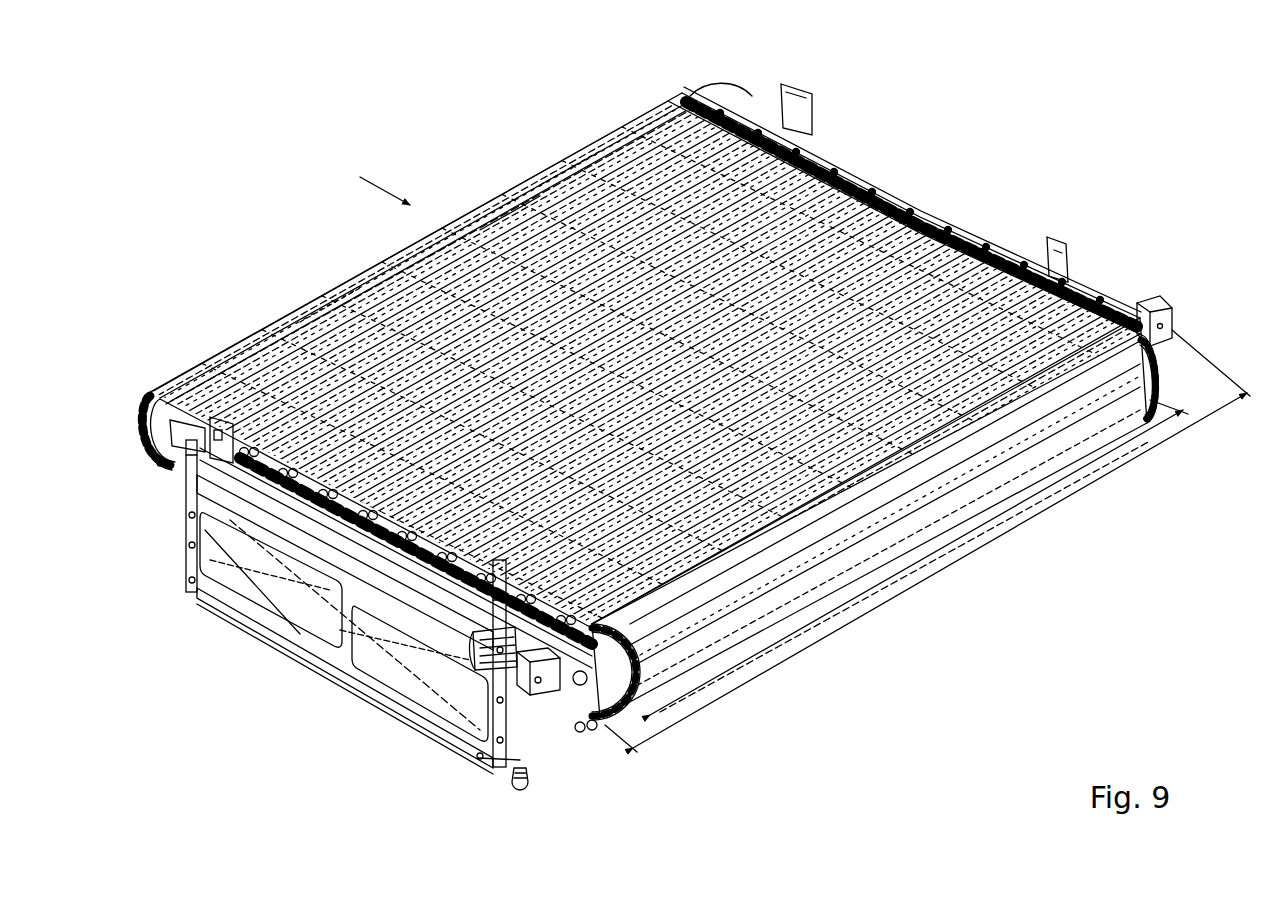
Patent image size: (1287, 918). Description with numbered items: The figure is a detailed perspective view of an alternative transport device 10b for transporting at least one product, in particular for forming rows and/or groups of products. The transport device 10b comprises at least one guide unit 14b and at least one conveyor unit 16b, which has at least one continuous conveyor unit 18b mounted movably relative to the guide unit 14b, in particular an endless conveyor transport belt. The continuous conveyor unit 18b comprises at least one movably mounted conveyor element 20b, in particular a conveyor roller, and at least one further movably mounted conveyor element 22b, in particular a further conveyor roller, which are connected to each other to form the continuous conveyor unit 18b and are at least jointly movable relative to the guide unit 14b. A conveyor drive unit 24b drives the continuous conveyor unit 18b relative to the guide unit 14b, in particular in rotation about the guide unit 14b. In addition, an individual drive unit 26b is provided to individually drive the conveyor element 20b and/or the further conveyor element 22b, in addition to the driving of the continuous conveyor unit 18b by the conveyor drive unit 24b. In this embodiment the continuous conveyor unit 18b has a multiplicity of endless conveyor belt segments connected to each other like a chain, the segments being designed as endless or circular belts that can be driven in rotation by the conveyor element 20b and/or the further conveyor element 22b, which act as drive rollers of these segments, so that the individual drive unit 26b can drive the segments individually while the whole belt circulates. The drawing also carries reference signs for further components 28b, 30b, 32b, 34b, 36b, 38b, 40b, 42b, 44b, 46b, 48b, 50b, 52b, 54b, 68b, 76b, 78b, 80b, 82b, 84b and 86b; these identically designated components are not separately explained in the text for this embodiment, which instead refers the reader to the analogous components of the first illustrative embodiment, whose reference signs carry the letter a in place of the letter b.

The transport device 10b is at (1165, 168).
The guide unit 14b is at (176, 558).
The conveyor unit 16b is at (168, 385).
The continuous conveyor unit 18b is at (438, 220).
The conveyor element 20b is at (303, 647).
The further conveyor element 22b is at (1018, 245).
The conveyor drive unit 24b is at (757, 95).
The individual drive unit 26b is at (463, 678).
The belt module 28b is at (330, 307).
The frame window 30b is at (262, 615).
The shaft bearing 32b is at (1040, 237).
The frame brace 34b is at (335, 657).
The mounting bracket 36b is at (1047, 248).
The diagonal strut 38b is at (300, 632).
The upper frame rail 40b is at (222, 597).
The chain guide rail 42b is at (980, 217).
The chain guide 44b is at (923, 202).
The idler bracket 46b is at (162, 470).
The side chain rollers 48b is at (264, 345).
The belt travel direction 50b is at (388, 192).
The belt side face 52b is at (935, 574).
The belt lower edge 54b is at (905, 624).
The leveling foot 68b is at (483, 767).
The drive sprocket 76b is at (592, 732).
The motor mount 78b is at (485, 761).
The bearing block 80b is at (1147, 292).
The drive motor 82b is at (400, 687).
The hinge rod 84b is at (567, 167).
The belt link 86b is at (508, 210).